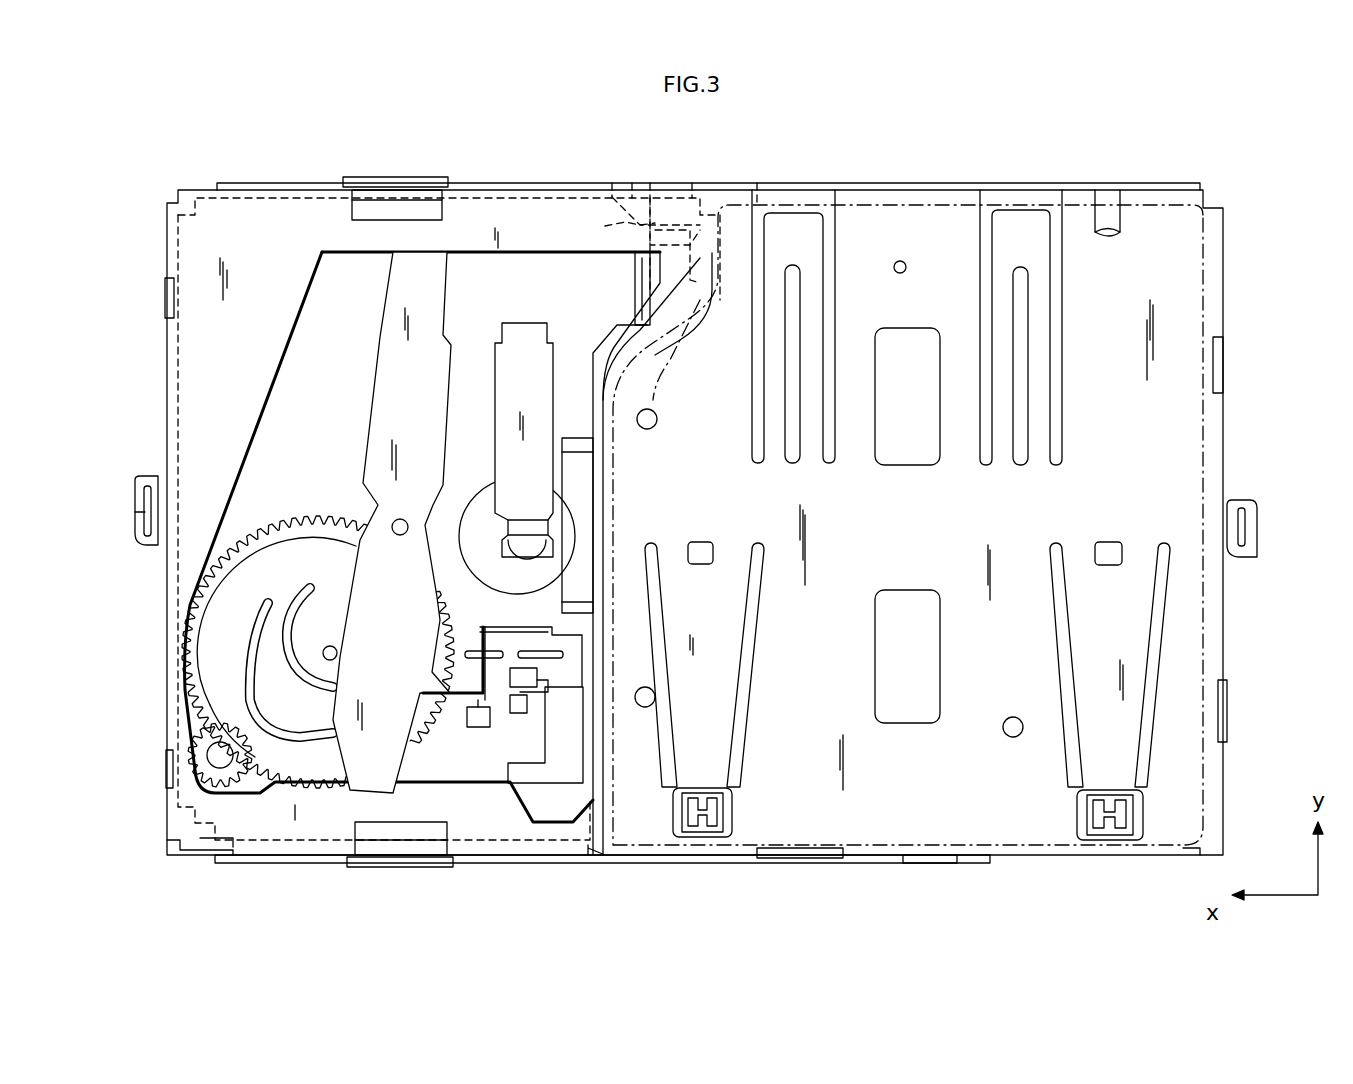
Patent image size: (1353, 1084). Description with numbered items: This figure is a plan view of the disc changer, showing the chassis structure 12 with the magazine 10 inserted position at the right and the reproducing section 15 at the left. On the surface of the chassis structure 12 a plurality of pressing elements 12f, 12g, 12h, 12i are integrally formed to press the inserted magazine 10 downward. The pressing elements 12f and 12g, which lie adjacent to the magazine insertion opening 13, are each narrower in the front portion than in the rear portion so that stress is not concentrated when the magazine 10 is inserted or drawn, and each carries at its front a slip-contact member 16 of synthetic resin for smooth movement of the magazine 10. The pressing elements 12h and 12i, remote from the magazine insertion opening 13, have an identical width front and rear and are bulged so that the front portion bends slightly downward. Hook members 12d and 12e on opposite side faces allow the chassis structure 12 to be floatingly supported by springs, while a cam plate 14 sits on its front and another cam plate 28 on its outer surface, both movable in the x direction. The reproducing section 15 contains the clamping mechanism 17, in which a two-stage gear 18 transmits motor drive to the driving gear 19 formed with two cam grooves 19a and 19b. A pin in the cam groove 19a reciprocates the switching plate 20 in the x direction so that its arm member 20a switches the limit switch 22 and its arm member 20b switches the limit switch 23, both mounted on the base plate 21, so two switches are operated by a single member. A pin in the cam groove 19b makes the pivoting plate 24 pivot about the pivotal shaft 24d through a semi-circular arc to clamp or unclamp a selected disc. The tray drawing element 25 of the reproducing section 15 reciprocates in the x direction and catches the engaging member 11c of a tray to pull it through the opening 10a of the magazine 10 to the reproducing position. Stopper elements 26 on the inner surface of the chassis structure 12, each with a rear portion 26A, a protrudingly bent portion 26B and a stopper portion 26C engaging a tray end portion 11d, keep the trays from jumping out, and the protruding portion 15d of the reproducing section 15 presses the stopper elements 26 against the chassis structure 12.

The magazine 10 is at (873, 200).
The opening 10a is at (613, 523).
The engaging member 11c is at (661, 326).
The end portion 11d is at (699, 326).
The chassis structure 12 is at (918, 178).
The hook member 12d is at (142, 543).
The hook member 12e is at (1243, 560).
The pressing element 12f is at (720, 680).
The pressing element 12g is at (1097, 685).
The pressing element 12h is at (810, 312).
The pressing element 12i is at (1000, 288).
The magazine insertion opening 13 is at (922, 863).
The cam plate 14 is at (577, 866).
The reproducing section 15 is at (295, 433).
The protruding portion 15d is at (632, 182).
The slip-contact member 16 is at (707, 842).
The clamping mechanism 17 is at (152, 673).
The two-stage gear 18 is at (205, 750).
The driving gear 19 is at (303, 523).
The cam groove 19a is at (268, 600).
The cam groove 19b is at (312, 588).
The switching plate 20 is at (525, 636).
The arm member 20a is at (481, 628).
The arm member 20b is at (534, 690).
The base plate 21 is at (524, 705).
The limit switch 22 is at (473, 713).
The limit switch 23 is at (515, 713).
The pivoting plate 24 is at (392, 522).
The pivotal shaft 24d is at (400, 536).
The tray drawing element 25 is at (616, 218).
The stopper element 26 is at (648, 183).
The rear portion 26A is at (612, 180).
The protrudingly bent portion 26B is at (692, 182).
The stopper portion 26C is at (757, 182).
The cam plate 28 is at (462, 182).